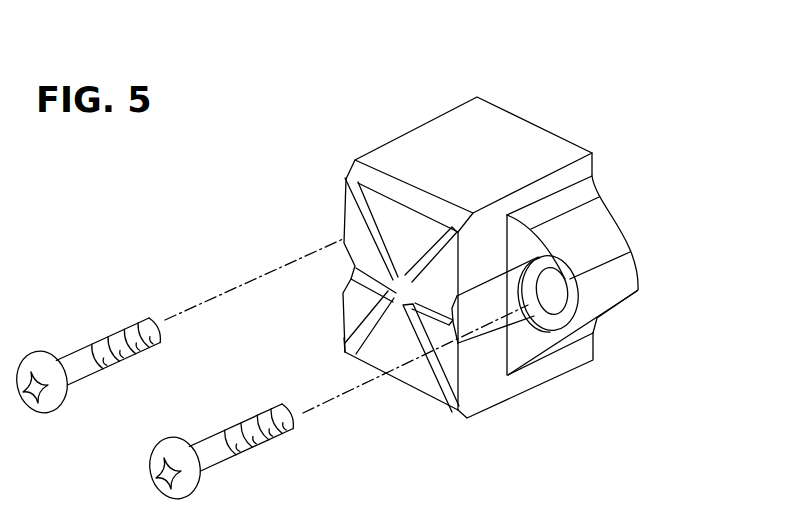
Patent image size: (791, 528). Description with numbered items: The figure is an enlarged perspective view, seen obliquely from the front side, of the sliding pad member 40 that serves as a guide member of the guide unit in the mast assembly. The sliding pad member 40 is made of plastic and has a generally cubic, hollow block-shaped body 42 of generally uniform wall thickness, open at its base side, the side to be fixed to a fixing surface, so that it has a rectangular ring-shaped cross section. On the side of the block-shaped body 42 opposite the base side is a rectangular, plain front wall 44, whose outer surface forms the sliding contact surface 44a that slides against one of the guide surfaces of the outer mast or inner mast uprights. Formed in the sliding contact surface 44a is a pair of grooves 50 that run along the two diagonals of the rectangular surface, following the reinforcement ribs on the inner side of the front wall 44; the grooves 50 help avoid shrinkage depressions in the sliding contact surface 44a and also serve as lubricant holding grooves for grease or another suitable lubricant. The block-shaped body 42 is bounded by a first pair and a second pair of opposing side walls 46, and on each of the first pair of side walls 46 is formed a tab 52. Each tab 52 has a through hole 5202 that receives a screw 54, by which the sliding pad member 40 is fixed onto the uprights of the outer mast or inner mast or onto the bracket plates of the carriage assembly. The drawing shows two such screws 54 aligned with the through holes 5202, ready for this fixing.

The sliding pad member 40 is at (505, 81).
The block-shaped body 42 is at (540, 122).
The front wall 44 is at (350, 213).
The sliding contact surface 44a is at (360, 304).
The opposing side walls 46 is at (427, 138).
The grooves 50 is at (345, 341).
The tab 52 is at (587, 248).
The through hole 5202 is at (542, 298).
The screw 54 is at (104, 374).